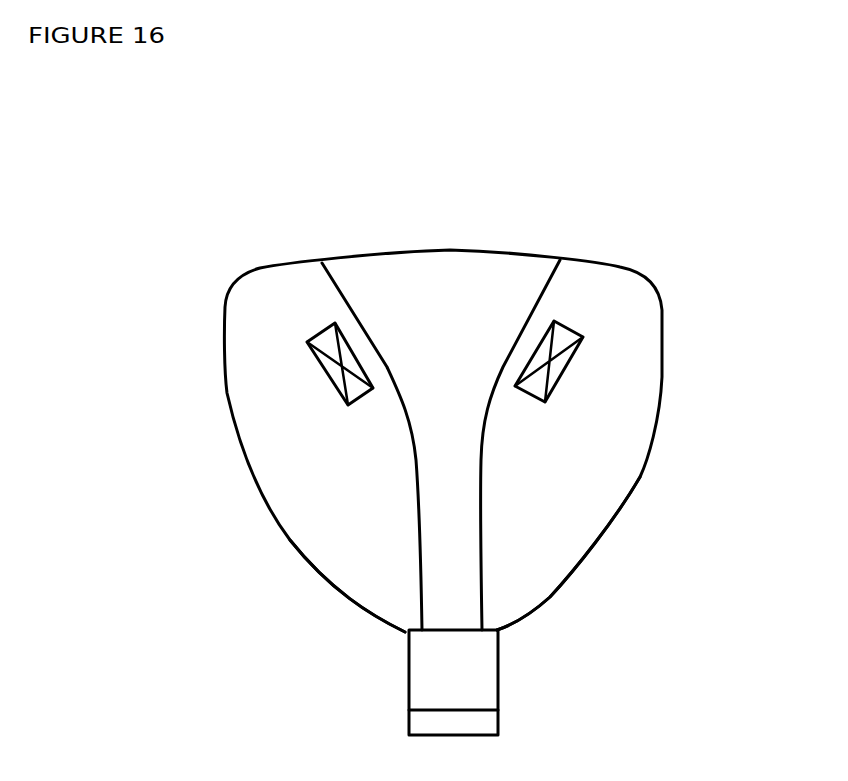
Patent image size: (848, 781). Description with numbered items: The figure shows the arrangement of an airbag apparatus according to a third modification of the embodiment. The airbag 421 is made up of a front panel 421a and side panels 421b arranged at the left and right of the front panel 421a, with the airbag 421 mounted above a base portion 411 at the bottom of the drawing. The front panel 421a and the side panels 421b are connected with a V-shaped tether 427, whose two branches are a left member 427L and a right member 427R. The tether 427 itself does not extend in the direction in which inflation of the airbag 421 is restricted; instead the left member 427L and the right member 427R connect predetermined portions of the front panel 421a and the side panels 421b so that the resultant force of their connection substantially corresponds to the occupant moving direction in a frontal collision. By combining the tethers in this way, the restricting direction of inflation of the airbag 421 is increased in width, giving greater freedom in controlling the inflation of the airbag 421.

The airbag 421 is at (259, 224).
The front panel 421a is at (530, 277).
The side panels 421b is at (500, 545).
The V-shaped tether 427 is at (446, 283).
The left member 427L is at (333, 373).
The right member 427R is at (558, 365).
The shaft / mounting base 411 is at (387, 694).